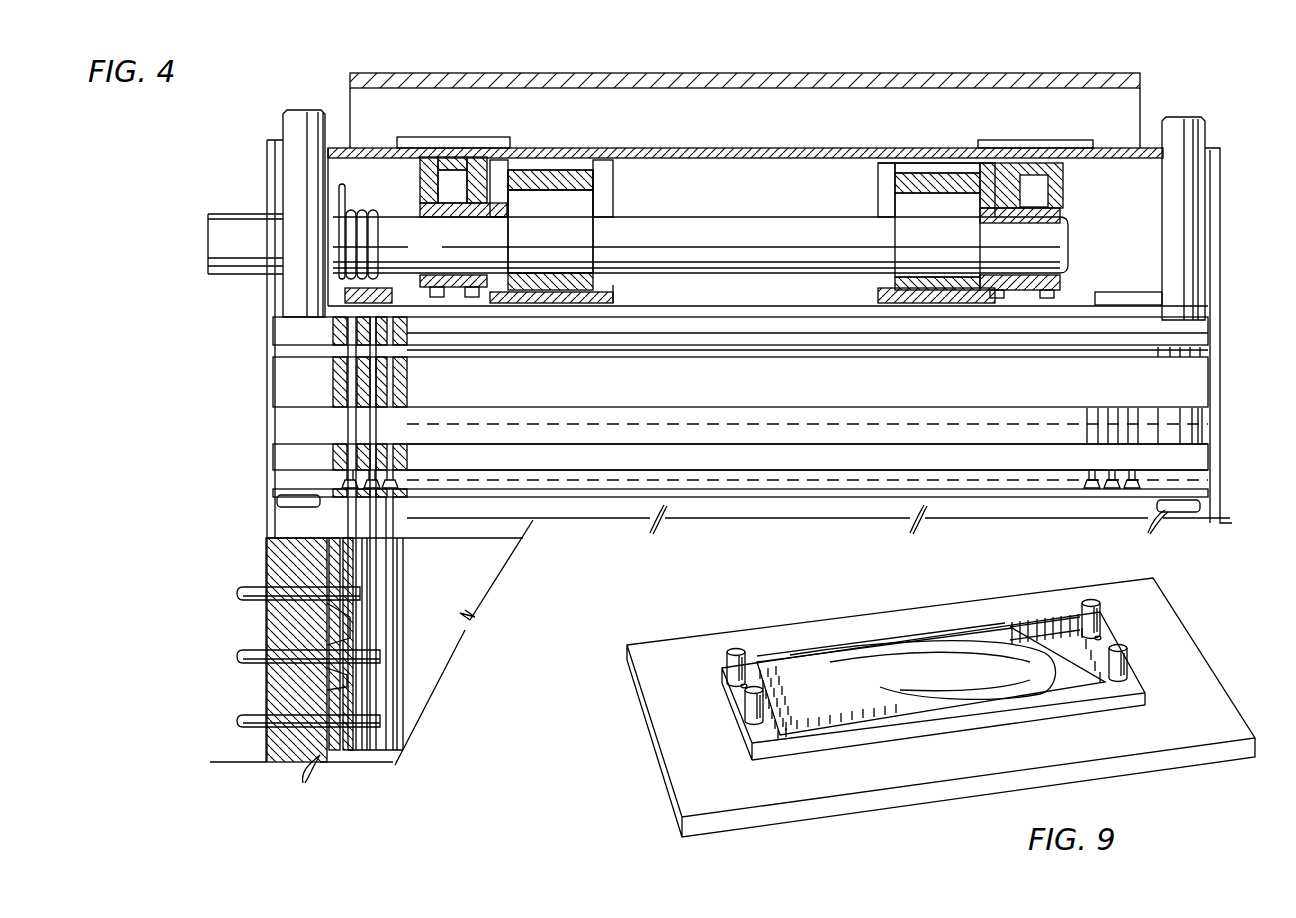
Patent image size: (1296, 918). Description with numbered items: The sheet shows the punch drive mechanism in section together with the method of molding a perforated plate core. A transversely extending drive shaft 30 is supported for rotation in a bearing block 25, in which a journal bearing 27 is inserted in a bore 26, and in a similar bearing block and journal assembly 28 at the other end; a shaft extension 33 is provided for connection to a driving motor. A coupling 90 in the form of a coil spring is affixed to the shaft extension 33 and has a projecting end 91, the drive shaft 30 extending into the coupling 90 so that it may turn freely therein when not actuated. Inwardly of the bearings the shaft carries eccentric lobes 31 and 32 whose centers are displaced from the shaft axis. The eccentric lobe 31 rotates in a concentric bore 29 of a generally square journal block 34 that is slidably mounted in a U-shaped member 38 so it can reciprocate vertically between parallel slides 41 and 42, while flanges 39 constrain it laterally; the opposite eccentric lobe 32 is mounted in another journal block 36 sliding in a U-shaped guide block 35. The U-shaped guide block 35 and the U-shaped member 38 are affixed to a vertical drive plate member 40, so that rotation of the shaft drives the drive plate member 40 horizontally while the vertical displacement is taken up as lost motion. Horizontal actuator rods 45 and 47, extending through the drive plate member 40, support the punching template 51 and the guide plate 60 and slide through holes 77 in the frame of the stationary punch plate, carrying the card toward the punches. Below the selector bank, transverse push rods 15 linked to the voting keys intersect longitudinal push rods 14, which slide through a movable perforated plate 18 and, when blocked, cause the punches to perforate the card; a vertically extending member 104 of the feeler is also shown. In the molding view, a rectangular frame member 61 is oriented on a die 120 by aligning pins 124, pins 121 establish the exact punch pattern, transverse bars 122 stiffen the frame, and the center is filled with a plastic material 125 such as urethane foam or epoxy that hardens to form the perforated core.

In FIG. 4, the longitudinal push rods 14 is at (387, 663).
In FIG. 4, the transverse push rods 15 is at (250, 587).
In FIG. 4, the movable perforated plate 18 is at (283, 490).
In FIG. 4, the bearing block 25 is at (420, 173).
In FIG. 4, the bore 26 is at (452, 219).
In FIG. 4, the journal bearing 27 is at (433, 212).
In FIG. 4, the bearing block and journal assembly 28 is at (1058, 195).
In FIG. 4, the concentric bore 29 is at (557, 192).
In FIG. 4, the drive shaft 30 is at (440, 254).
In FIG. 4, the eccentric lobe 31 is at (575, 172).
In FIG. 4, the eccentric lobe 32 is at (938, 176).
In FIG. 4, the shaft extension 33 is at (227, 237).
In FIG. 4, the journal block 34 is at (541, 172).
In FIG. 4, the U-shaped guide block 35 is at (912, 167).
In FIG. 4, the journal block 36 is at (885, 163).
In FIG. 4, the U-shaped member 38 is at (596, 160).
In FIG. 4, the flanges 39 is at (614, 172).
In FIG. 4, the drive plate member 40 is at (767, 312).
In FIG. 4, the parallel slide 41 is at (506, 166).
In FIG. 4, the parallel slide 42 is at (615, 293).
In FIG. 4, the horizontal actuator rod 45 is at (308, 110).
In FIG. 4, the horizontal actuator rod 47 is at (1195, 138).
In FIG. 4, the punching template 51 is at (283, 325).
In FIG. 4, the guide plate 60 is at (283, 380).
In FIG. 9, the frame member 61 is at (1105, 642).
In FIG. 4, the holes 77 is at (293, 445).
In FIG. 4, the coupling 90 is at (357, 207).
In FIG. 4, the end 91 is at (337, 187).
In FIG. 4, the member 104 is at (817, 76).
In FIG. 9, the die 120 is at (1193, 682).
In FIG. 9, the pins 121 is at (767, 660).
In FIG. 9, the transverse bars 122 is at (980, 647).
In FIG. 9, the aligning pins 124 is at (737, 650).
In FIG. 9, the plastic material 125 is at (877, 668).